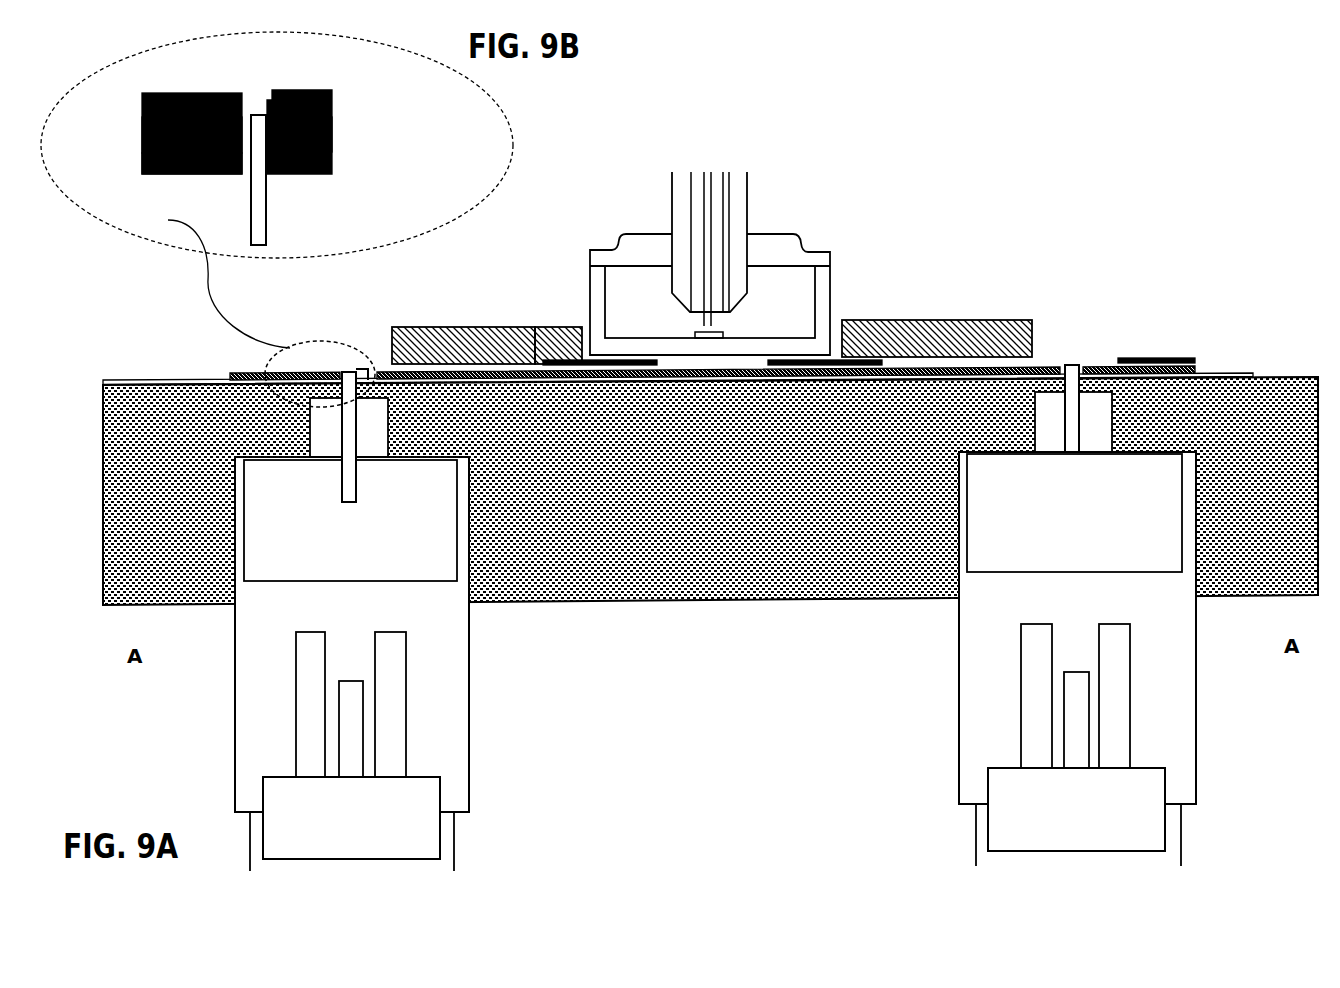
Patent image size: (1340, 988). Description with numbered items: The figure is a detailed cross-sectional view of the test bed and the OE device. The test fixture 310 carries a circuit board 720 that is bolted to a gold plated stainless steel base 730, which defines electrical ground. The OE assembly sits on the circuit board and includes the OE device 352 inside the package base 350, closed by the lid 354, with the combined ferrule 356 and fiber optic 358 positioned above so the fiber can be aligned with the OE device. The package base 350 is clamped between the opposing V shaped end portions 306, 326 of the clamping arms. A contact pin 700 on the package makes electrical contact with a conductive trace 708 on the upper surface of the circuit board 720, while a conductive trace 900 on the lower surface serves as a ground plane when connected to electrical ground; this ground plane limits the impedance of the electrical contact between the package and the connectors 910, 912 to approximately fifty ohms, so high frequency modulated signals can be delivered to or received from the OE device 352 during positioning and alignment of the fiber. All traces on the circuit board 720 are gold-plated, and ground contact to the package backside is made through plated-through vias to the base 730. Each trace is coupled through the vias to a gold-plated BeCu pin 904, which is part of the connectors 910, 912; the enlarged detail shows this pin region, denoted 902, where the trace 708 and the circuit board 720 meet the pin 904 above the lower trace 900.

In FIG. 9B, the pin connector 902 is at (267, 150).
In FIG. 9A, the pin connector 902 is at (340, 370).
In FIG. 9B, the trace 708 is at (152, 156).
In FIG. 9A, the trace 708 is at (547, 352).
In FIG. 9B, the circuit board 720 is at (330, 130).
In FIG. 9A, the circuit board 720 is at (262, 372).
In FIG. 9B, the conductive trace 900 is at (197, 174).
In FIG. 9B, the gold-plated BeCu pin 904 is at (260, 213).
In FIG. 9A, the V shaped end portion 306 is at (473, 327).
In FIG. 9A, the pin 700 is at (488, 290).
In FIG. 9A, the fiber optic 358 is at (707, 236).
In FIG. 9A, the ferrule 356 is at (731, 249).
In FIG. 9A, the lid 354 is at (797, 262).
In FIG. 9A, the package base 350 is at (853, 279).
In FIG. 9A, the OE device 352 is at (695, 333).
In FIG. 9A, the V shaped end portion 326 is at (1032, 335).
In FIG. 9A, the test fixture 310 is at (1236, 316).
In FIG. 9A, the base 730 is at (757, 567).
In FIG. 9A, the connector 910 is at (460, 671).
In FIG. 9A, the connector 912 is at (977, 702).